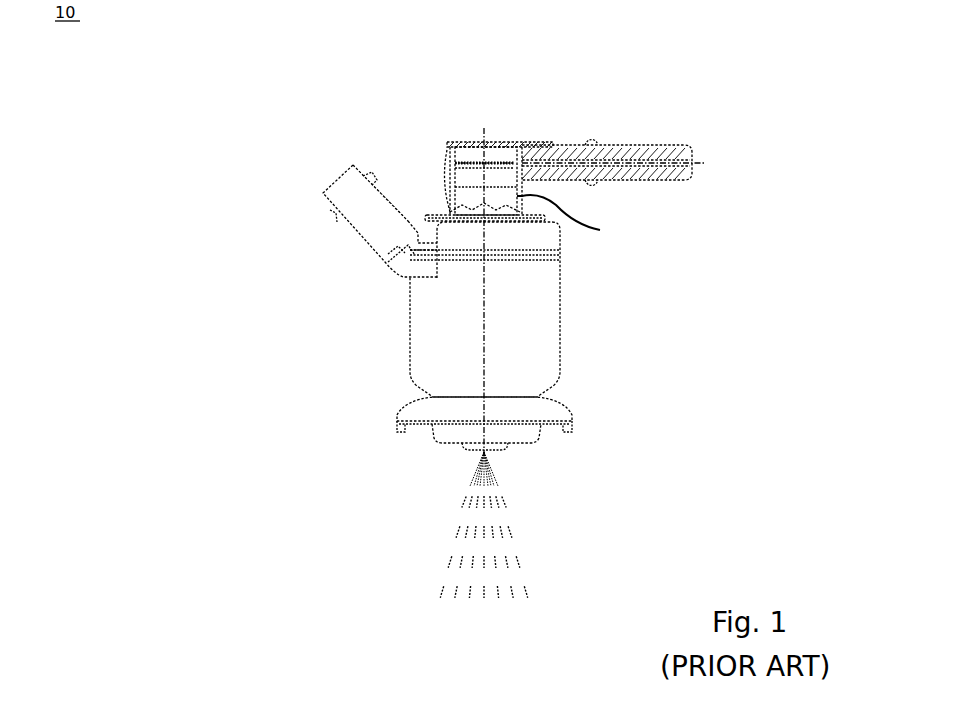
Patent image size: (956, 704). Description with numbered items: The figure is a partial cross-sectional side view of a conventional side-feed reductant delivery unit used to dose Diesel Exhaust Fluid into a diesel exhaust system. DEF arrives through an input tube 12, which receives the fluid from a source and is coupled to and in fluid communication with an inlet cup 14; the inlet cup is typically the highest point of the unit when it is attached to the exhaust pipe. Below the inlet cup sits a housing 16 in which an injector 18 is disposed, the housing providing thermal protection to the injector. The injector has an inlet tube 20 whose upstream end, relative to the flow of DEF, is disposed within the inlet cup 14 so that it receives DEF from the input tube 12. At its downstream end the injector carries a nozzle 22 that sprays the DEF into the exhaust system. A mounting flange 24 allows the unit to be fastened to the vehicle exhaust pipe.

The input tube 12 is at (643, 142).
The inlet cup 14 is at (510, 142).
The housing 16 is at (409, 328).
The injector 18 is at (580, 219).
The inlet tube 20 is at (465, 160).
The nozzle 22 is at (477, 455).
The mounting flange 24 is at (573, 409).